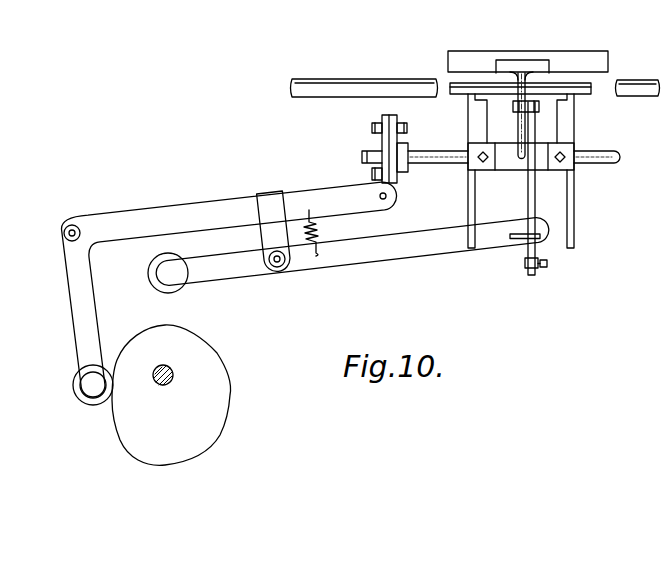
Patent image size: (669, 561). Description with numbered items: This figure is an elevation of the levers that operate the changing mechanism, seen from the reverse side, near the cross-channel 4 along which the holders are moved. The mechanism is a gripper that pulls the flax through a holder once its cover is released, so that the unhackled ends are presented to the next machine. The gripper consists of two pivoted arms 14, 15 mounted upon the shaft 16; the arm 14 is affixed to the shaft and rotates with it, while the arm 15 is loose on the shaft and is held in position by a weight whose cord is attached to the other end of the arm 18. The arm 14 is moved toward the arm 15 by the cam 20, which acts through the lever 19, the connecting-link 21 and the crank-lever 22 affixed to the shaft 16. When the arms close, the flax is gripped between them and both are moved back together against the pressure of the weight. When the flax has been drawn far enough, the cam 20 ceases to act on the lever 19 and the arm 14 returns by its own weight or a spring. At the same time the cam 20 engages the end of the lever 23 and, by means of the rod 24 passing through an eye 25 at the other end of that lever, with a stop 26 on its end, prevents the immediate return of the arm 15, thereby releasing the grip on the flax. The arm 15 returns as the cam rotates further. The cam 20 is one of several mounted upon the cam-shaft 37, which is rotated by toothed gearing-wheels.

The cross-channel 4 is at (364, 79).
The arm 14 is at (574, 113).
The arm 15 is at (515, 51).
The shaft 16 is at (603, 152).
The arm 18 is at (515, 106).
The lever 19 is at (64, 315).
The cam 20 is at (171, 395).
The connecting-link 21 is at (381, 137).
The crank-lever 22 is at (398, 138).
The lever 23 is at (397, 255).
The rod 24 is at (528, 248).
The eye 25 is at (537, 228).
The stop 26 is at (538, 263).
The cam-shaft 37 is at (162, 365).